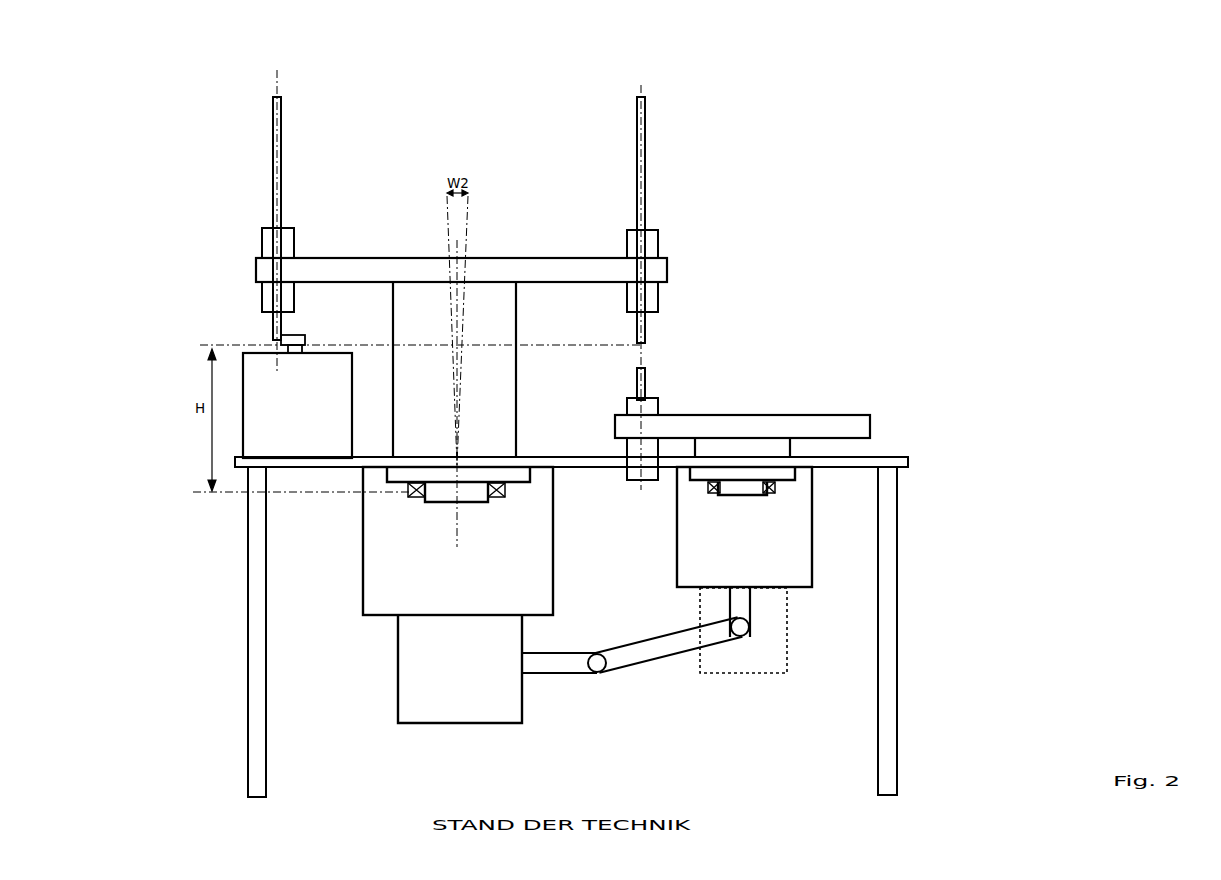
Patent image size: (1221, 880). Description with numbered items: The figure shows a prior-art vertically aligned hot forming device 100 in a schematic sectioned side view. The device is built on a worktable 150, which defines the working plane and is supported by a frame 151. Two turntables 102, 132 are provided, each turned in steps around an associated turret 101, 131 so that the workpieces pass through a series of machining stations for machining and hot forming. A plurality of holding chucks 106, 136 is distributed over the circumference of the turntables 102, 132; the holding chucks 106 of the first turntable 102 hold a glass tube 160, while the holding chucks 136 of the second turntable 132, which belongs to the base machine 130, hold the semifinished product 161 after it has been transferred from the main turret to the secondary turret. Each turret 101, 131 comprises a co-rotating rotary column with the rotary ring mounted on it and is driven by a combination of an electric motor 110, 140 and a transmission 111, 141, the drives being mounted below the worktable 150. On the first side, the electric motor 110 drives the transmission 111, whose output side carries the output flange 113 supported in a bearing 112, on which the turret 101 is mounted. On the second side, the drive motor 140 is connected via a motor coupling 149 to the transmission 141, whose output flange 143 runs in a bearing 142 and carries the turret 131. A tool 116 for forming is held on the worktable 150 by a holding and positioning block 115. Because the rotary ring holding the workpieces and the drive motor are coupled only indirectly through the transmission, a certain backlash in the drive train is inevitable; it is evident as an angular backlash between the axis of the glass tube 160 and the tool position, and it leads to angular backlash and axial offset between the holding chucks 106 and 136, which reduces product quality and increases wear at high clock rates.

The hot forming device 100 is at (215, 78).
The turret 101 is at (490, 330).
The turntable 102 is at (552, 258).
The holding chuck 106 is at (657, 300).
The electric motor 110 is at (412, 682).
The transmission 111 is at (377, 558).
The bearing 112 is at (505, 488).
The output flange 113 is at (515, 478).
The holding and positioning block 115 is at (257, 387).
The tool 116 is at (297, 336).
The base machine 130 is at (935, 120).
The turret 131 is at (778, 440).
The turntable 132 is at (862, 423).
The holding chuck 136 is at (648, 405).
The drive motor 140 is at (773, 653).
The transmission 141 is at (698, 537).
The bearing 142 is at (773, 490).
The output flange 143 is at (784, 476).
The motor coupling 149 is at (622, 673).
The worktable 150 is at (892, 462).
The frame 151 is at (900, 630).
The glass tube 160 is at (282, 112).
The semifinished product 161 is at (634, 378).